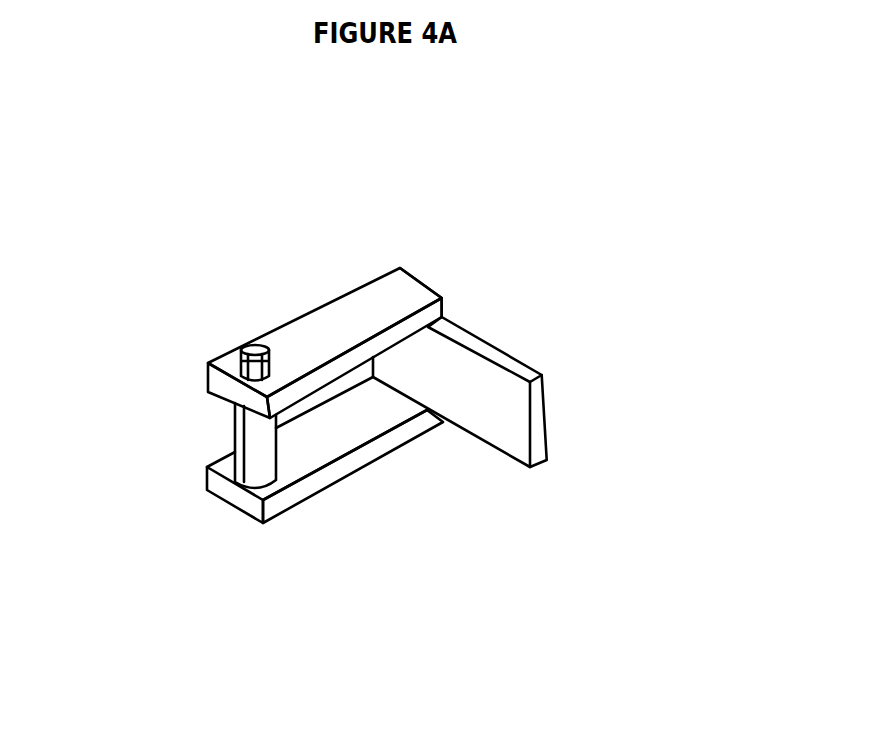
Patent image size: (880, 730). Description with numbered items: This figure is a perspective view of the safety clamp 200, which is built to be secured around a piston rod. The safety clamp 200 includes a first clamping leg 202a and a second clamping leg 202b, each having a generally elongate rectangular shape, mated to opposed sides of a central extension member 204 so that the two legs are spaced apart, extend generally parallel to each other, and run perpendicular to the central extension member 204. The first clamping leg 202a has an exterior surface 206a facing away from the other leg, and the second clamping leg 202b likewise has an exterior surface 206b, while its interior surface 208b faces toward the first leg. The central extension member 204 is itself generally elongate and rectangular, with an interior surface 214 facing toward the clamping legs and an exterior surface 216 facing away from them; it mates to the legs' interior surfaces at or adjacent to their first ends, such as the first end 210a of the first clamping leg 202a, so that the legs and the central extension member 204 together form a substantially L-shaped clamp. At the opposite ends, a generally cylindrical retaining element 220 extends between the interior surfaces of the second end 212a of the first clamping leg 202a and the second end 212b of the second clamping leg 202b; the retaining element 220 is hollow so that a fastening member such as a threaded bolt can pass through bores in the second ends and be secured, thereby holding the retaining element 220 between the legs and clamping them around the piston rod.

The safety clamp 200 is at (639, 206).
The first clamping leg 202a is at (288, 298).
The second clamping leg 202b is at (313, 523).
The central extension member 204 is at (576, 363).
The exterior surface of first clamping leg 206a is at (378, 300).
The exterior surface of second clamping leg 206b is at (393, 448).
The interior surface of second clamping leg 208b is at (298, 453).
The first end of first clamping leg 210a is at (421, 283).
The second end of first clamping leg 212a is at (225, 384).
The second end of second clamping leg 212b is at (228, 489).
The interior surface of central extension member 214 is at (493, 423).
The exterior surface of central extension member 216 is at (500, 349).
The retaining element 220 is at (257, 438).